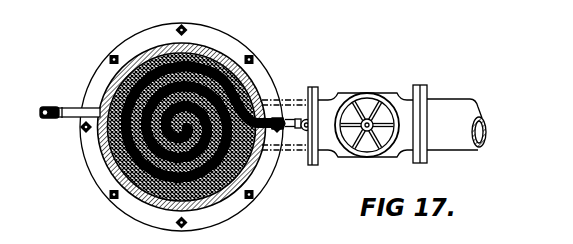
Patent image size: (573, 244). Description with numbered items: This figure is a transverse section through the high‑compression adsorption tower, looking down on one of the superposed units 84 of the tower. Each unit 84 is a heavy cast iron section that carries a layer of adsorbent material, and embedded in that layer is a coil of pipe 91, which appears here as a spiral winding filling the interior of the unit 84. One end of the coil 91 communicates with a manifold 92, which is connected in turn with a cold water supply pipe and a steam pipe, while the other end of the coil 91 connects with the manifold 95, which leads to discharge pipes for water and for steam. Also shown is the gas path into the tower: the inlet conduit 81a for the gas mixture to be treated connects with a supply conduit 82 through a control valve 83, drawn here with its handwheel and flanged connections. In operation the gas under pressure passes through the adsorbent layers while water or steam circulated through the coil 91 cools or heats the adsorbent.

The superposed unit 84 is at (150, 56).
The coil of pipe 91 is at (200, 58).
The manifold 95 is at (43, 107).
The inlet conduit 81a is at (295, 100).
The manifold 92 is at (305, 132).
The control valve 83 is at (370, 91).
The supply conduit 82 is at (456, 108).